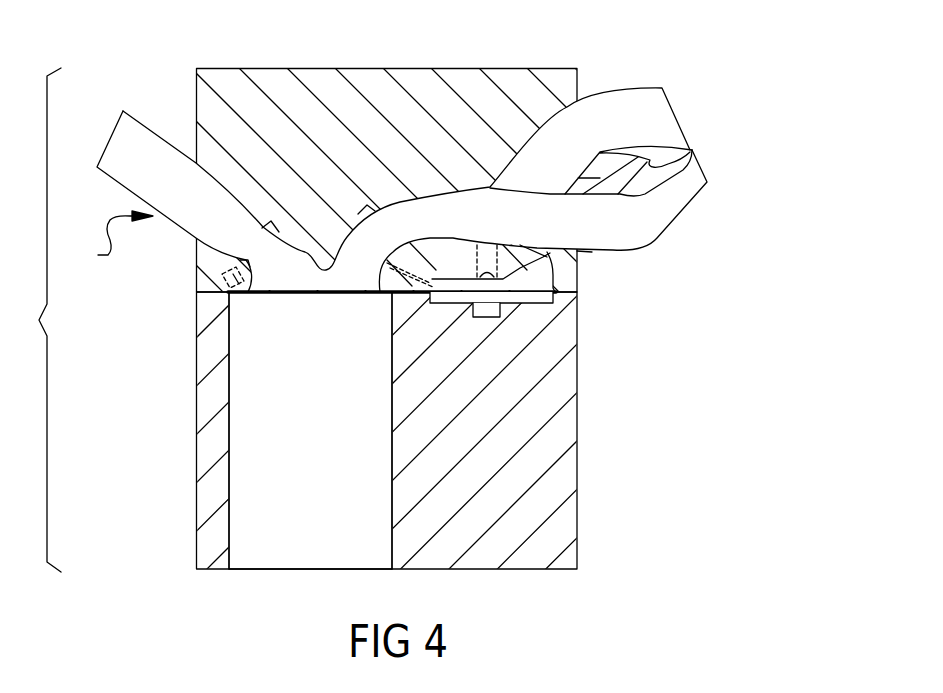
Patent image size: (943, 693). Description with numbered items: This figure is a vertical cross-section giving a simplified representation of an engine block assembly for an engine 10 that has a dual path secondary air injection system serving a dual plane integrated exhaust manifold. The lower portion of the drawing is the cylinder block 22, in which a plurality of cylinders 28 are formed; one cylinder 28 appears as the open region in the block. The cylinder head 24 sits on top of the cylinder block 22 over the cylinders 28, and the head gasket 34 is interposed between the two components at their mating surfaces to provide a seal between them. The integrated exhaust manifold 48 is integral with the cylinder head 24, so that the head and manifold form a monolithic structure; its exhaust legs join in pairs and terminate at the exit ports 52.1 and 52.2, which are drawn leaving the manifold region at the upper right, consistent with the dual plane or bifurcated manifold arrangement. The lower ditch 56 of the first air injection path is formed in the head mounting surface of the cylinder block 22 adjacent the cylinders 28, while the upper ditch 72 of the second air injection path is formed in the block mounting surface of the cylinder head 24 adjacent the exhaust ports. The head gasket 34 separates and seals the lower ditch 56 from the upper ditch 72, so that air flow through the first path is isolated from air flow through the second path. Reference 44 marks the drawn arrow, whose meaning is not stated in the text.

The engine 10 is at (36, 320).
The cylinder block 22 is at (568, 522).
The cylinder head 24 is at (206, 263).
The cylinders 28 is at (324, 444).
The head gasket 34 is at (563, 297).
The flow direction arrow 44 is at (113, 239).
The integrated exhaust manifold 48 is at (553, 77).
The exit port 52.1 is at (706, 170).
The exit port 52.2 is at (676, 117).
The lower ditch 56 is at (535, 305).
The upper ditch 72 is at (550, 266).